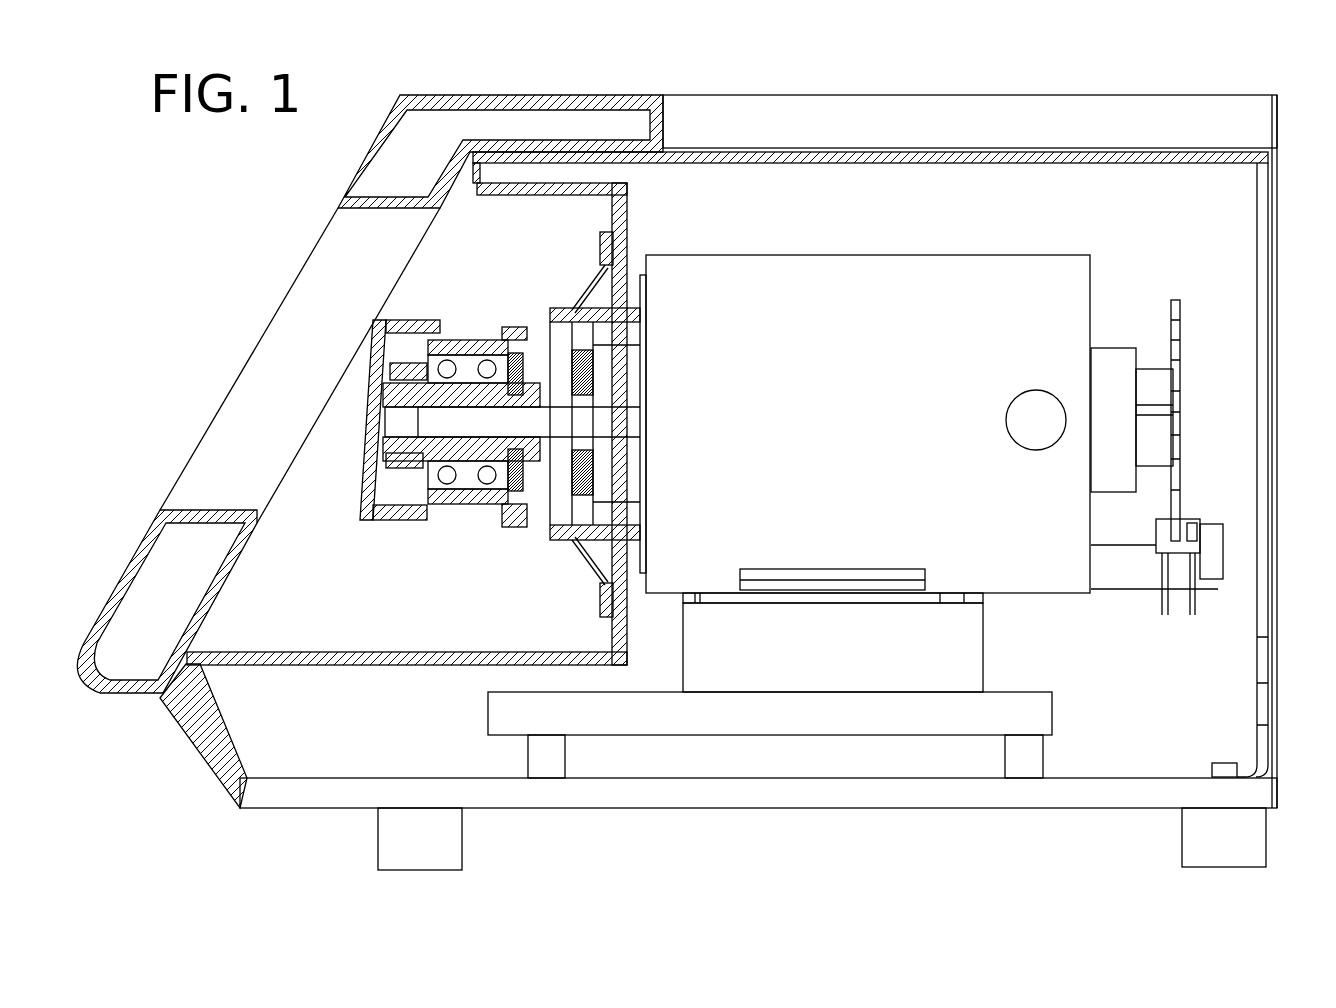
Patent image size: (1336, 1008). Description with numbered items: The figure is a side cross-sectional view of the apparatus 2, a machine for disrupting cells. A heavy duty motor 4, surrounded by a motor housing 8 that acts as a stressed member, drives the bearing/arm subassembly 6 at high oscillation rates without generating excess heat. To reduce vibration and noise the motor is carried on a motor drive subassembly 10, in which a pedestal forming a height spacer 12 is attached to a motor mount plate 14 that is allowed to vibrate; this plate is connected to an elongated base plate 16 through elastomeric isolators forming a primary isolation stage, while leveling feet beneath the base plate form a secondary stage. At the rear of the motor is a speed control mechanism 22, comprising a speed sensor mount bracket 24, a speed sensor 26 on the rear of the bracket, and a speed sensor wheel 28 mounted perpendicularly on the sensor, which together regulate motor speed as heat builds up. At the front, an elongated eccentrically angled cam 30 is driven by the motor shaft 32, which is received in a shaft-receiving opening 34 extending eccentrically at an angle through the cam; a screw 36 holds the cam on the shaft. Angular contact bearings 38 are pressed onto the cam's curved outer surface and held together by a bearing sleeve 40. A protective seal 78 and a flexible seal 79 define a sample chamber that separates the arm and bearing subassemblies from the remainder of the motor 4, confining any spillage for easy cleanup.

The apparatus 2 is at (830, 93).
The motor 4 is at (878, 285).
The bearing/arm subassembly 6 is at (471, 312).
The motor housing 8 is at (1018, 255).
The motor drive subassembly 10 is at (1068, 683).
The height spacer 12 is at (800, 665).
The motor mount plate 14 is at (645, 722).
The base plate 16 is at (943, 793).
The speed control mechanism 22 is at (1200, 495).
The speed sensor mount bracket 24 is at (1208, 570).
The speed sensor 26 is at (1200, 520).
The speed sensor wheel 28 is at (1175, 300).
The eccentrically angled cam 30 is at (483, 422).
The motor shaft 32 is at (380, 328).
The shaft-receiving opening 34 is at (548, 312).
The screw 36 is at (380, 462).
The angular contact bearings 38 is at (468, 368).
The bearing sleeve 40 is at (455, 520).
The protective seal 78 is at (523, 340).
The flexible seal 79 is at (585, 560).